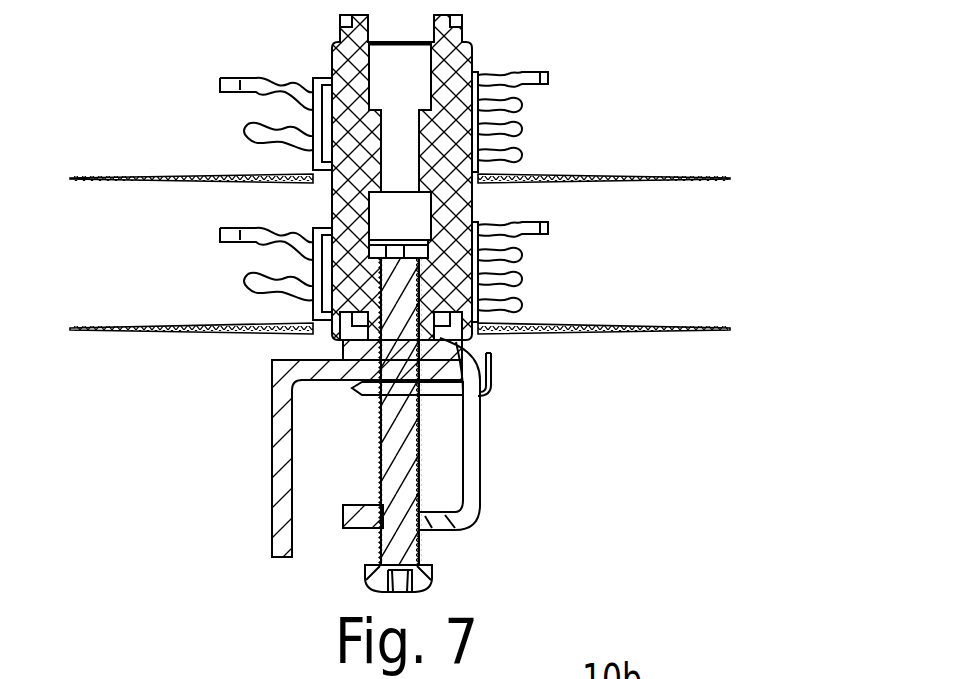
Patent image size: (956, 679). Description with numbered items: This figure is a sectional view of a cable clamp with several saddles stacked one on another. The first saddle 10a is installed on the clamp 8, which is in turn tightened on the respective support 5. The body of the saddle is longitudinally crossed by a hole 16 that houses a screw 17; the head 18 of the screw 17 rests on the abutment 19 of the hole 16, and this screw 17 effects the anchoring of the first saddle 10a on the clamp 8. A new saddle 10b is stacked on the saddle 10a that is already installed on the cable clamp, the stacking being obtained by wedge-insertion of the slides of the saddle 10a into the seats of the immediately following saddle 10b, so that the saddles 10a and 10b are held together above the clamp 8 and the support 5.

The first saddle 10a is at (454, 238).
The new saddle 10b is at (455, 57).
The hole 16 is at (394, 211).
The screw 17 is at (400, 307).
The head 18 is at (423, 248).
The abutment 19 is at (428, 257).
The support 5 is at (282, 536).
The clamp 8 is at (466, 506).